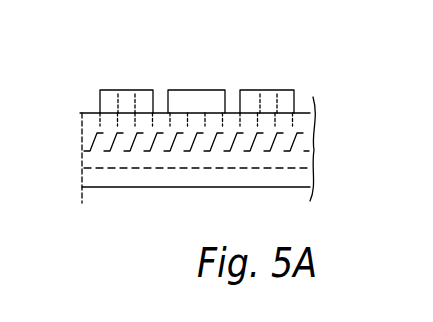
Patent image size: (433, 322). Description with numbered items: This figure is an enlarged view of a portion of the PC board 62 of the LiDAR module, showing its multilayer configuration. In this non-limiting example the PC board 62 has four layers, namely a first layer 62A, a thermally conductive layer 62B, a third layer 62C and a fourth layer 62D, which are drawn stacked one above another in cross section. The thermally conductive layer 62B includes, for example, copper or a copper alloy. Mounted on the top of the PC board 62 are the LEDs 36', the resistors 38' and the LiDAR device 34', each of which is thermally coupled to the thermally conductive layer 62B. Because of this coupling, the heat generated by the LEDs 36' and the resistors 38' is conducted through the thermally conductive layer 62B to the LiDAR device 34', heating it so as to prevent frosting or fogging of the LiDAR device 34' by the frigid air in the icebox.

The PC board 62 is at (328, 97).
The first layer 62A is at (81, 123).
The thermally conductive layer 62B is at (83, 127).
The third layer 62C is at (85, 158).
The fourth layer 62D is at (150, 177).
The LiDAR device 34' is at (197, 68).
The LEDs 36' is at (197, 66).
The resistors 38' is at (223, 69).